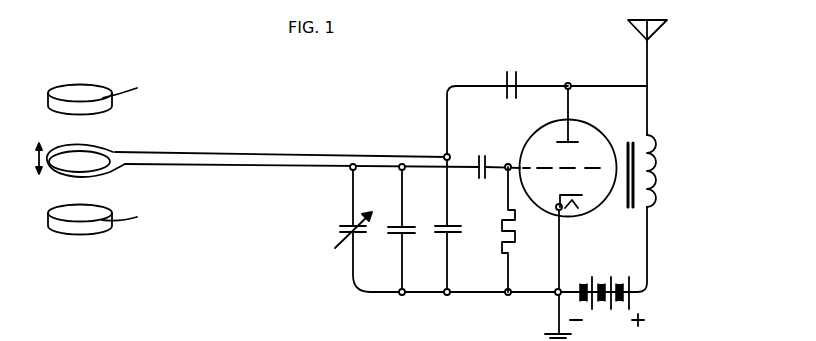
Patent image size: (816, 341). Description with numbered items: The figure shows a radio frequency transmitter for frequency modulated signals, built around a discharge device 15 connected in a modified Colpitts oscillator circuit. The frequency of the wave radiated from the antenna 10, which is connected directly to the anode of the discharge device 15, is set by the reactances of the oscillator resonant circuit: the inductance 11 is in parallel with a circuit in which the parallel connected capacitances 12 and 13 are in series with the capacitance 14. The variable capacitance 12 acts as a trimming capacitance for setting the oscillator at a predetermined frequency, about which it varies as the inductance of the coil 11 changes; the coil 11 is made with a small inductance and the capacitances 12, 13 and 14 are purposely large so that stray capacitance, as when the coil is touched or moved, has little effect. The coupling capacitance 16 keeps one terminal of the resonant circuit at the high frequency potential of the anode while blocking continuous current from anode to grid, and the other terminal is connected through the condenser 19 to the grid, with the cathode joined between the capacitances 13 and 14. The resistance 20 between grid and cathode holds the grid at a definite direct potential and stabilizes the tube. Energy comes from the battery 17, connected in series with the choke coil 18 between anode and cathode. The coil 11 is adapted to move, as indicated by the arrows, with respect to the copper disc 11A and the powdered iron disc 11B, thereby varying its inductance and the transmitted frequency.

The antenna 10 is at (656, 30).
The inductance 11 is at (112, 153).
The copper disc 11A is at (83, 92).
The powdered iron disc 11B is at (75, 225).
The variable capacitance 12 is at (342, 228).
The capacitance 13 is at (409, 230).
The capacitance 14 is at (462, 230).
The discharge device 15 is at (598, 147).
The coupling capacitance 16 is at (517, 79).
The battery 17 is at (607, 275).
The choke coil 18 is at (655, 193).
The condenser 19 is at (483, 155).
The resistance 20 is at (515, 255).